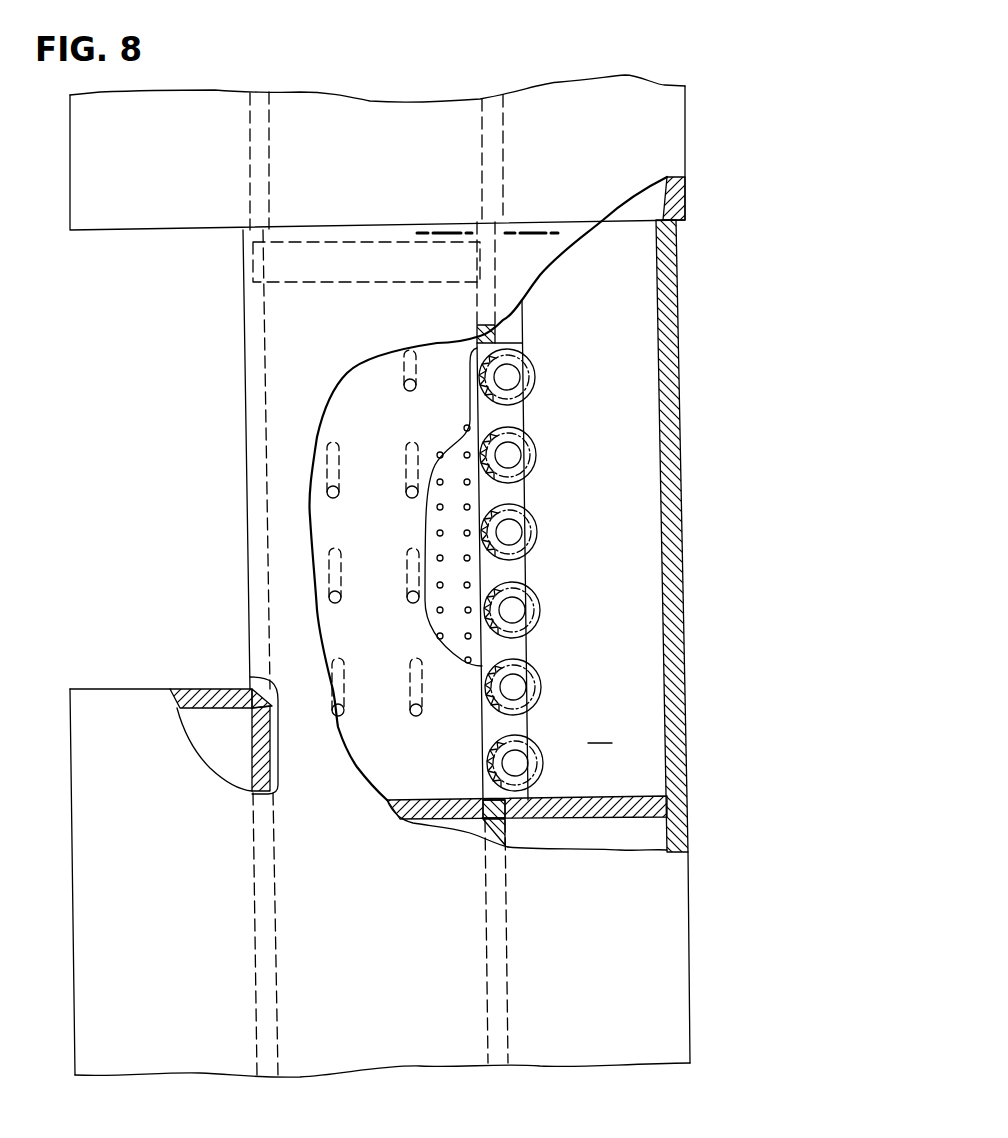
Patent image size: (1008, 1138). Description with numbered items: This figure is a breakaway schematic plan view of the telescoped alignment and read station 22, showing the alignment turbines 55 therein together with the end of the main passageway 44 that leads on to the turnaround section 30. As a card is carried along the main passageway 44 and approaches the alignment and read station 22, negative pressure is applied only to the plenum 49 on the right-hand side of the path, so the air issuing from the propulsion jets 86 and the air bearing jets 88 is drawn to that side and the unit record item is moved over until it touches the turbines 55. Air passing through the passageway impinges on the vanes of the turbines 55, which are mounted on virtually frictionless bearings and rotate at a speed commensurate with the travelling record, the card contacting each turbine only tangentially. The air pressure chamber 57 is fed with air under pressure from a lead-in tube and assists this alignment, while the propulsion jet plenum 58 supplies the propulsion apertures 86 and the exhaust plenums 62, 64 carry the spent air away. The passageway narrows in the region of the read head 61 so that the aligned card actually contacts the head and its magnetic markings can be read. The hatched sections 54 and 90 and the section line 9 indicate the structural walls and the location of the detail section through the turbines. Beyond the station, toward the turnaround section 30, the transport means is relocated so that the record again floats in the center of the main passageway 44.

The turnaround section 30 is at (378, 107).
The alignment and read station 22 is at (180, 385).
The read head 61 is at (253, 264).
The section line 9- 9 is at (442, 222).
The air pressure chamber 57 is at (322, 533).
The propulsion apertures 86 is at (408, 497).
The air bearing apertures 88 is at (460, 640).
The turbines 55 is at (525, 445).
The plenum 49 is at (600, 730).
The propulsion jet plenum 58 is at (455, 822).
The exhaust plenum 64 is at (655, 836).
The exhaust plenum 62 is at (206, 718).
The recess 90 is at (248, 784).
The channel member 54 is at (268, 752).
The main passageway 44 is at (488, 1032).